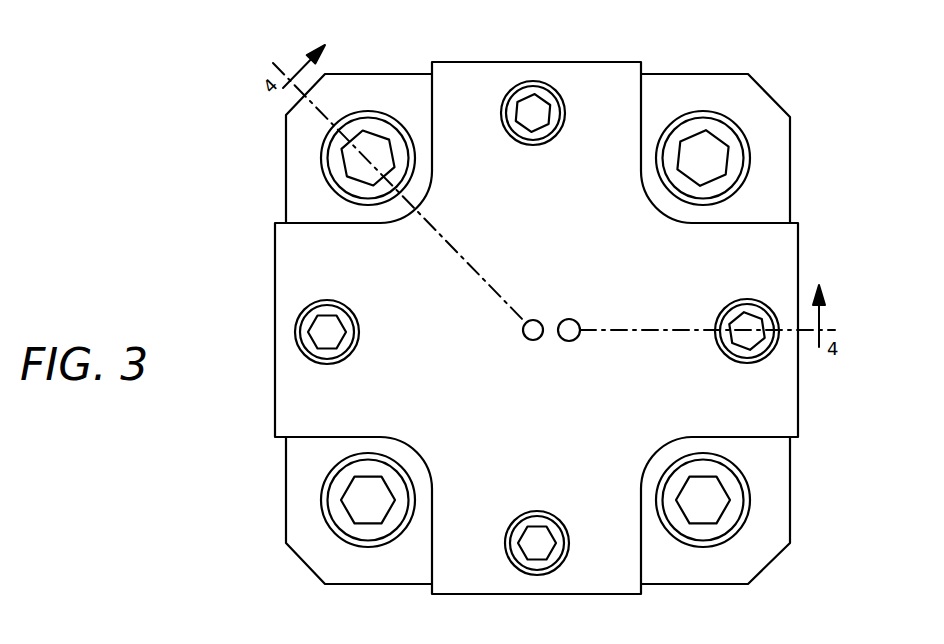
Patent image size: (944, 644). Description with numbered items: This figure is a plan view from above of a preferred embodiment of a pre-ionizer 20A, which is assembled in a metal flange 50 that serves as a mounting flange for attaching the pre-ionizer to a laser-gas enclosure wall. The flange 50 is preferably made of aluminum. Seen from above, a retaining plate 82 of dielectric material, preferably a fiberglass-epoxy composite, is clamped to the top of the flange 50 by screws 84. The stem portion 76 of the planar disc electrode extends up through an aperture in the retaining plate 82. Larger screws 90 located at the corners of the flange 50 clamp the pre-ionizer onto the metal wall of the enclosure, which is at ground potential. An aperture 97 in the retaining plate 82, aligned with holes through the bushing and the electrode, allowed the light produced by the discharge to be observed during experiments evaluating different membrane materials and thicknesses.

The pre-ionizer 20A is at (136, 275).
The flange 50 is at (271, 511).
The stem portion 76 is at (524, 326).
The retaining plate 82 is at (258, 264).
The screws 84 is at (307, 347).
The screws 90 is at (327, 150).
The aperture 97 is at (575, 317).